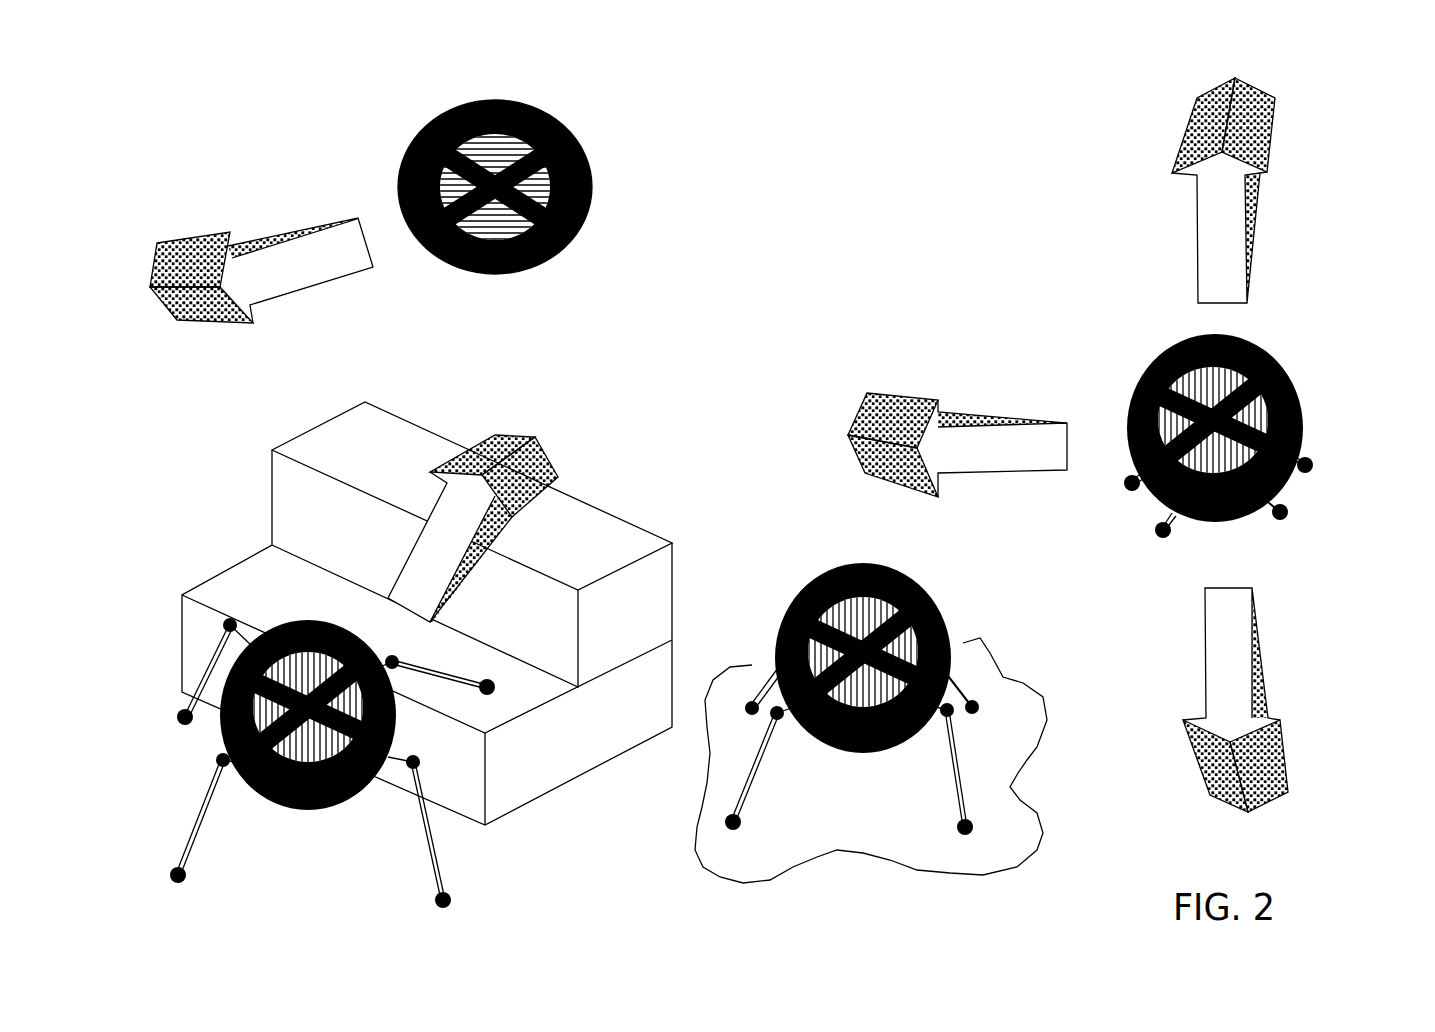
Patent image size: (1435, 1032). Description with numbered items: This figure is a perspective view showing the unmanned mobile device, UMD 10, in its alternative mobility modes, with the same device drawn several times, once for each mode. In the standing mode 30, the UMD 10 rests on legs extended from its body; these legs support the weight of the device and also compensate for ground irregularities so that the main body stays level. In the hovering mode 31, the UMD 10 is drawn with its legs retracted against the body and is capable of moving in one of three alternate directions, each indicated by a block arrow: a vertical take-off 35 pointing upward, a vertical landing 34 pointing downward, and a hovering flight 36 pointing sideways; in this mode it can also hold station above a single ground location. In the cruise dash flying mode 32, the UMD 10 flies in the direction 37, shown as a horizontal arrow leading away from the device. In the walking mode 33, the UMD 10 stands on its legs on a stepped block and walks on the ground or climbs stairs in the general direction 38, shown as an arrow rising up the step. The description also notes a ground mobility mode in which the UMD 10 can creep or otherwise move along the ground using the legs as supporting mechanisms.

The UMD 10 is at (428, 118).
The standing mode 30 is at (953, 585).
The hovering mode 31 is at (1313, 360).
The cruise dash flying mode 32 is at (622, 135).
The walking mode 33 is at (198, 744).
The vertical landing 34 is at (1227, 687).
The vertical take-off 35 is at (1220, 222).
The hovering flight 36 is at (995, 452).
The direction 37 is at (310, 263).
The general direction 38 is at (453, 522).